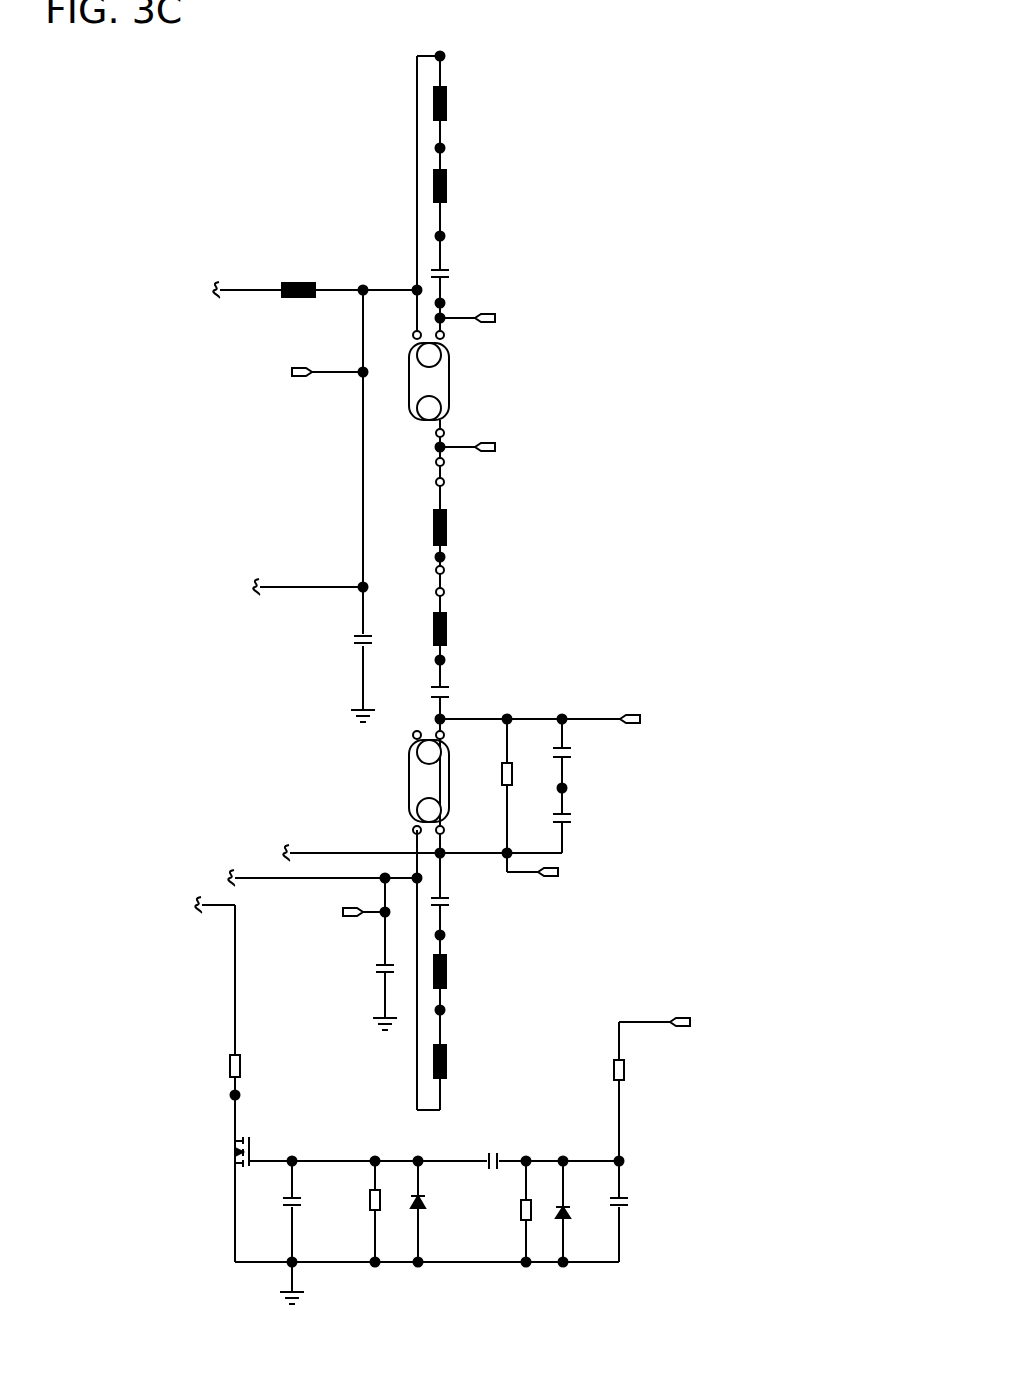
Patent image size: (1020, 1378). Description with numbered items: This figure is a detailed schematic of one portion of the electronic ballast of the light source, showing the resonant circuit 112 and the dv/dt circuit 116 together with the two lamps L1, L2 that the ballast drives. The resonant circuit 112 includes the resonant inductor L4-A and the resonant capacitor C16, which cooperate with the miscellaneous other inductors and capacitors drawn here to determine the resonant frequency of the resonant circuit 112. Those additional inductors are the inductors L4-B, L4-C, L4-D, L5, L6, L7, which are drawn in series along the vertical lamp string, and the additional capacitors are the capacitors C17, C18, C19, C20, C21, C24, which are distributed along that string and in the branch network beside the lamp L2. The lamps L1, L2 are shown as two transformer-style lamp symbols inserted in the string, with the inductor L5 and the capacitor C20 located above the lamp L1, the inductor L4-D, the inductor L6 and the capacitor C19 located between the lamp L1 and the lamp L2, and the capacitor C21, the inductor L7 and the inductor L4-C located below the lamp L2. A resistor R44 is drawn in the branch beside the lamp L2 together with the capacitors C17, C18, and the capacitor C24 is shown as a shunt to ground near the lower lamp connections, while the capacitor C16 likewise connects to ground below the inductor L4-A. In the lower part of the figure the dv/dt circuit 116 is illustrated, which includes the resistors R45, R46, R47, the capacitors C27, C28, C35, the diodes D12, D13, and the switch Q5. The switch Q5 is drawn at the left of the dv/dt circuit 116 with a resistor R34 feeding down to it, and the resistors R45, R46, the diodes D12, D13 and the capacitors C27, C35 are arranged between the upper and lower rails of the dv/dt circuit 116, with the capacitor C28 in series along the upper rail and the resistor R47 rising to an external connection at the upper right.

The resonant circuit 112 is at (188, 470).
The dv/dt circuit 116 is at (762, 1103).
The lamp L1 is at (441, 381).
The lamp L2 is at (416, 781).
The switch Q5 is at (254, 1152).
The inductor L4-A is at (296, 279).
The inductor L4-B is at (450, 103).
The inductor L4-C is at (450, 1061).
The inductor L4-D is at (450, 527).
The inductor L5 is at (450, 186).
The inductor L6 is at (450, 629).
The inductor L7 is at (450, 971).
The capacitor C16 is at (351, 640).
The capacitor C17 is at (570, 752).
The capacitor C18 is at (570, 818).
The capacitor C19 is at (448, 692).
The capacitor C20 is at (448, 273).
The capacitor C21 is at (448, 901).
The capacitor C24 is at (374, 968).
The capacitor C27 is at (280, 1202).
The capacitor C28 is at (489, 1153).
The capacitor C35 is at (626, 1202).
The resistor R34 is at (222, 1066).
The resistor R44 is at (494, 774).
The resistor R45 is at (384, 1202).
The resistor R46 is at (513, 1212).
The resistor R47 is at (630, 1070).
The diode D12 is at (426, 1205).
The diode D13 is at (573, 1215).